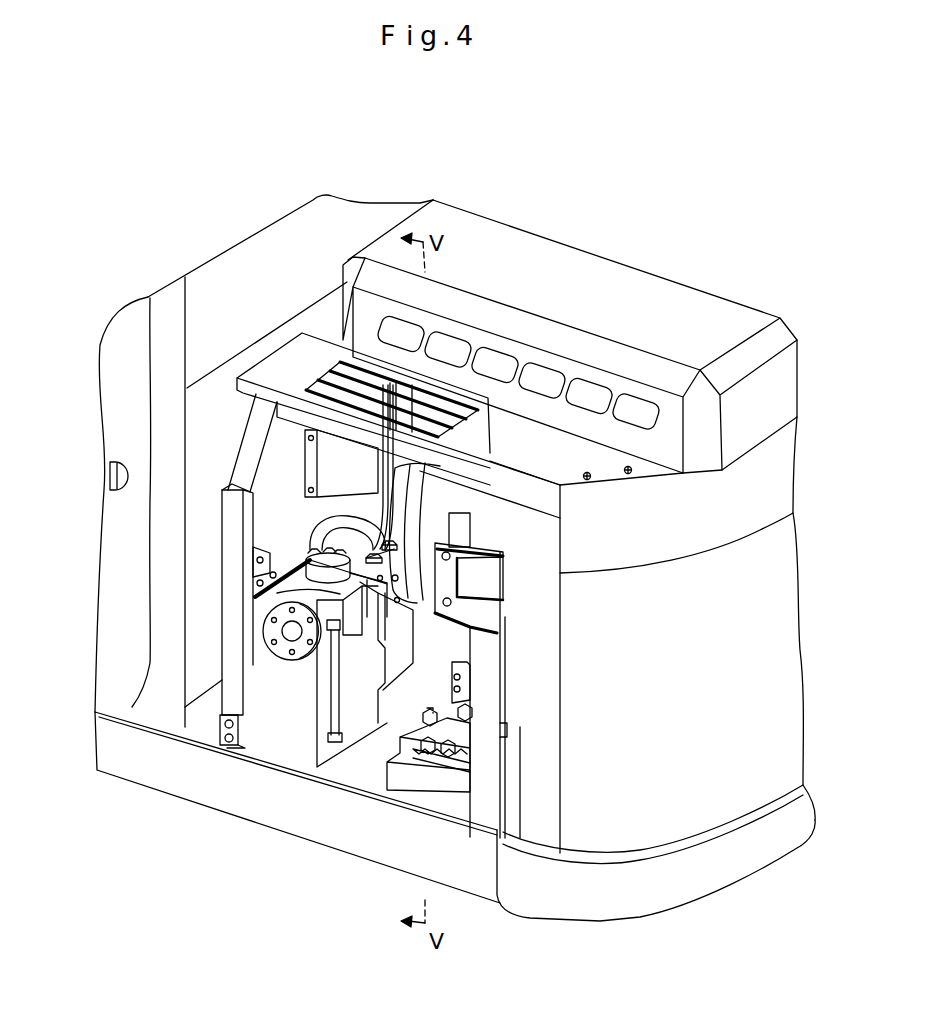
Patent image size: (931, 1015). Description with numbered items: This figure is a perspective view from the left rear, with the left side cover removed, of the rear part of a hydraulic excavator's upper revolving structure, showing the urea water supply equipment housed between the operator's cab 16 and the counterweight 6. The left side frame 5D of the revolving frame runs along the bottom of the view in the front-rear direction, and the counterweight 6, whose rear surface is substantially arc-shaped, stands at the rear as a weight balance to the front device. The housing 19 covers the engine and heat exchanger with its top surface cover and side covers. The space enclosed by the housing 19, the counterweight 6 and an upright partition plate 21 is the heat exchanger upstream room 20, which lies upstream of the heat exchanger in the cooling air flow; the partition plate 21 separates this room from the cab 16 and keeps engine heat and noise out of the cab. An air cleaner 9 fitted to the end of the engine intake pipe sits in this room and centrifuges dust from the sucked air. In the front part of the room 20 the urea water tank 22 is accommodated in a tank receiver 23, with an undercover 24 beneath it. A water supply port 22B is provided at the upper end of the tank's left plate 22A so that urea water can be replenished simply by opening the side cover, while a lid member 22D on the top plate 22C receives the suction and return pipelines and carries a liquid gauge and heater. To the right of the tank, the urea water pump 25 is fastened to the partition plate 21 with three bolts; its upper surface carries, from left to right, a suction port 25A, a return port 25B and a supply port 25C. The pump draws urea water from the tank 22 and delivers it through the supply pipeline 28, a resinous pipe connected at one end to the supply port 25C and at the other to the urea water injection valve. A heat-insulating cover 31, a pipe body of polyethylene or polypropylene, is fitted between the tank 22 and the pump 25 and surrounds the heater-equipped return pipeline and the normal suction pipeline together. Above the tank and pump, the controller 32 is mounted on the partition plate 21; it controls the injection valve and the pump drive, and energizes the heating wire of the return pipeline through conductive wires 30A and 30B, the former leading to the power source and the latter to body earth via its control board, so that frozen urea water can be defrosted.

The cab 16 is at (293, 258).
The housing 19 is at (568, 463).
The air cleaner 9 is at (500, 510).
The counterweight 6 is at (720, 608).
The left side frame 5D is at (157, 758).
The supply pipeline 28 is at (373, 370).
The partition plate 21 is at (233, 530).
The controller 32 is at (330, 462).
The heat-insulating cover 31 is at (347, 527).
The conductive wire 30A is at (383, 548).
The conductive wire 30B is at (368, 550).
The urea water tank 22 is at (305, 735).
The left plate 22A is at (280, 710).
The water supply port 22B is at (282, 631).
The top plate 22C is at (313, 603).
The lid member 22D is at (317, 568).
The tank receiver 23 is at (356, 768).
The heat exchanger upstream room 20 is at (443, 638).
The undercover 24 is at (418, 688).
The urea water pump 25 is at (445, 604).
The suction port 25A is at (393, 577).
The return port 25B is at (388, 565).
The supply port 25C is at (390, 556).